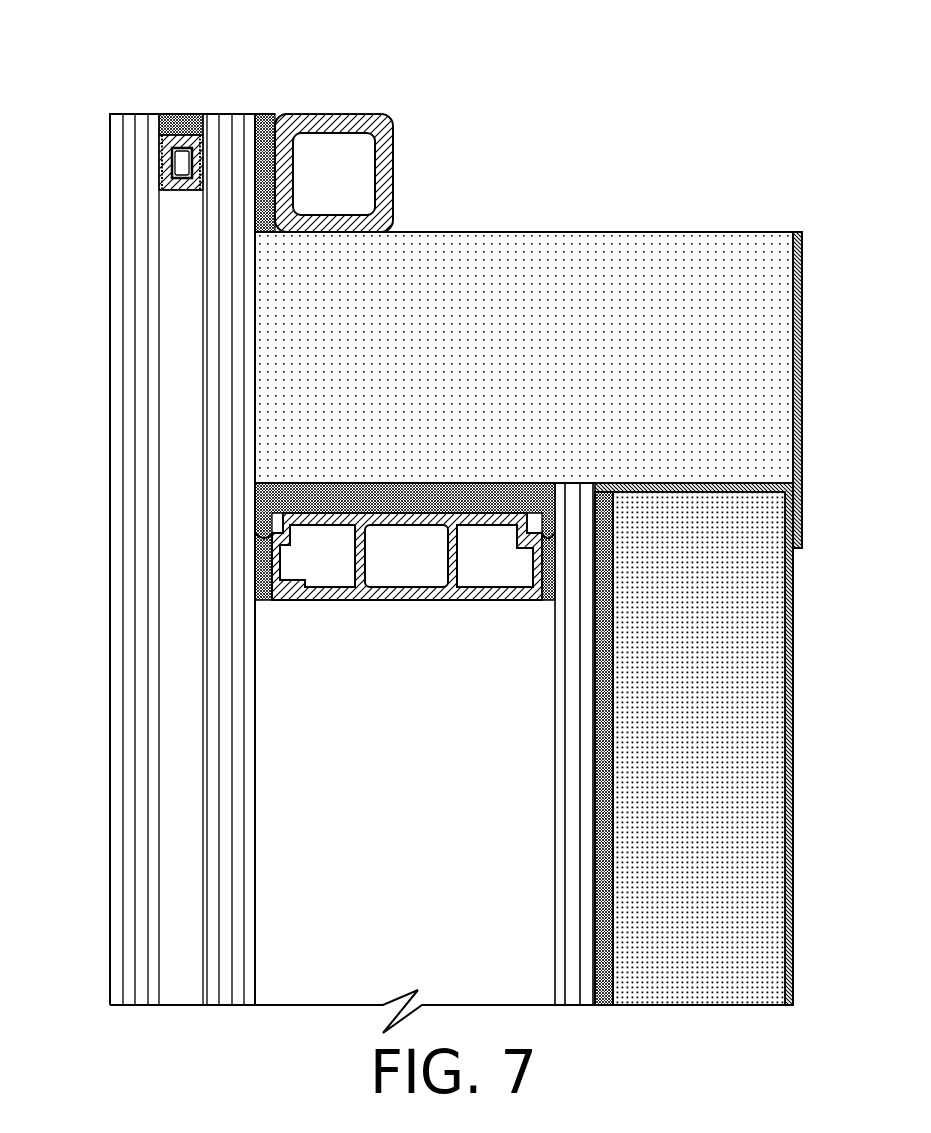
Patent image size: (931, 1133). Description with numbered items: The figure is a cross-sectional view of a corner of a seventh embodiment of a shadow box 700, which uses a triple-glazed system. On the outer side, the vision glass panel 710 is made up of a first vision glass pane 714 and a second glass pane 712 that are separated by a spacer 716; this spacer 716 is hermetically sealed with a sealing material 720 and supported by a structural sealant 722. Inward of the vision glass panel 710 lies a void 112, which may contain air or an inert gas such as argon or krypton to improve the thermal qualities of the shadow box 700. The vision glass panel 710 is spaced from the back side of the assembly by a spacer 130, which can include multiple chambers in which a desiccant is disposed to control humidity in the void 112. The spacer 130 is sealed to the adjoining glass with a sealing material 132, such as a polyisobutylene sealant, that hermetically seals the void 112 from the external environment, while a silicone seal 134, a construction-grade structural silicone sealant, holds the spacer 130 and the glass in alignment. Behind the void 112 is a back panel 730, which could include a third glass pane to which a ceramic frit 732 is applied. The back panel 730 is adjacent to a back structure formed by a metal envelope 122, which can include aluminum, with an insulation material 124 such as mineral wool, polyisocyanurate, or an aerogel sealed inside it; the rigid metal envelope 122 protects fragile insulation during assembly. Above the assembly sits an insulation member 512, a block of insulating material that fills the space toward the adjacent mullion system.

The shadow box 700 is at (85, 70).
The vision glass panel 710 is at (110, 790).
The first vision glass pane 714 is at (110, 665).
The second glass pane 712 is at (283, 750).
The sealing material 720 is at (159, 152).
The structural sealant 722 is at (173, 114).
The spacer 716 is at (188, 178).
The silicone seal 134 is at (260, 114).
The insulation member 512 is at (360, 114).
The spacer 130 is at (412, 595).
The sealing material 132 is at (260, 603).
The void 112 is at (438, 827).
The back panel 730 is at (555, 862).
The ceramic frit 732 is at (593, 908).
The metal envelope 122 is at (812, 677).
The insulation material 124 is at (705, 809).